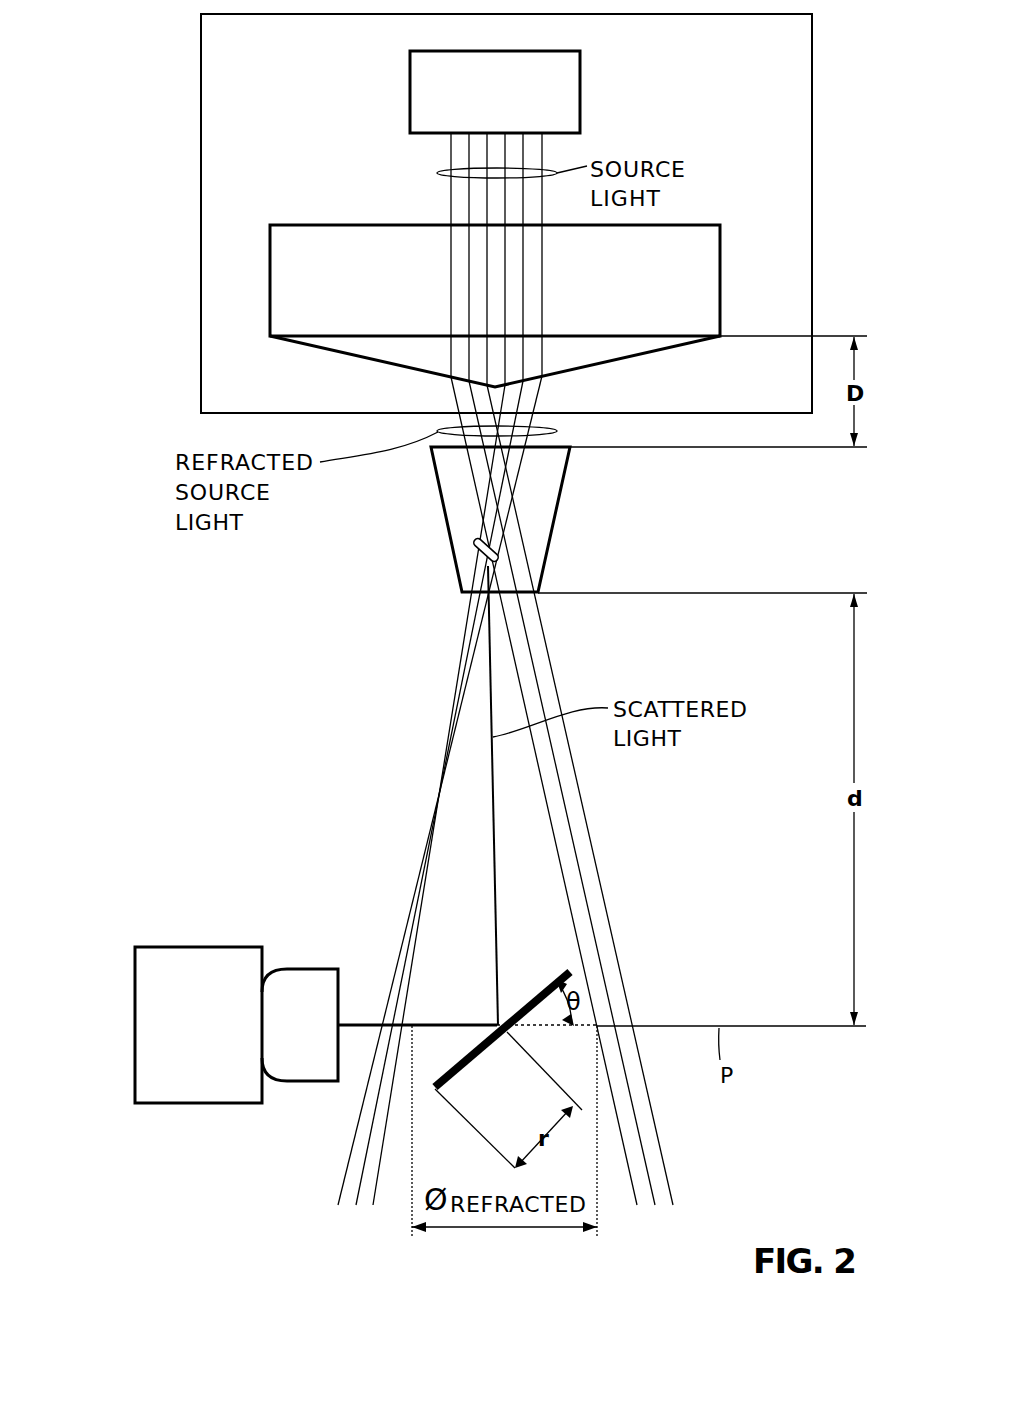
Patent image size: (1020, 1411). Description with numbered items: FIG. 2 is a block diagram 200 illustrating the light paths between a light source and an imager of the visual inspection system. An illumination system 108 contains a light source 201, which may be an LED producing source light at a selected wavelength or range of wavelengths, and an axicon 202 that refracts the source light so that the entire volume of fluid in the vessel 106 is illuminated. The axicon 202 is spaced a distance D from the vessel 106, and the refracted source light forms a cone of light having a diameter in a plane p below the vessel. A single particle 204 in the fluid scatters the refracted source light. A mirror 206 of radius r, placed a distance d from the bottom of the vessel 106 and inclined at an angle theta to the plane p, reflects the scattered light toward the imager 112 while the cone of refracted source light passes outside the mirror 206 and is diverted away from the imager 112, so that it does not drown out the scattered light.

The block diagram 200 is at (146, 84).
The illumination system 108 is at (813, 101).
The light source 201 is at (581, 70).
The axicon 202 is at (721, 258).
The vessel 106 is at (571, 509).
The particle 204 is at (478, 545).
The imager 112 is at (216, 945).
The mirror 206 is at (485, 1047).